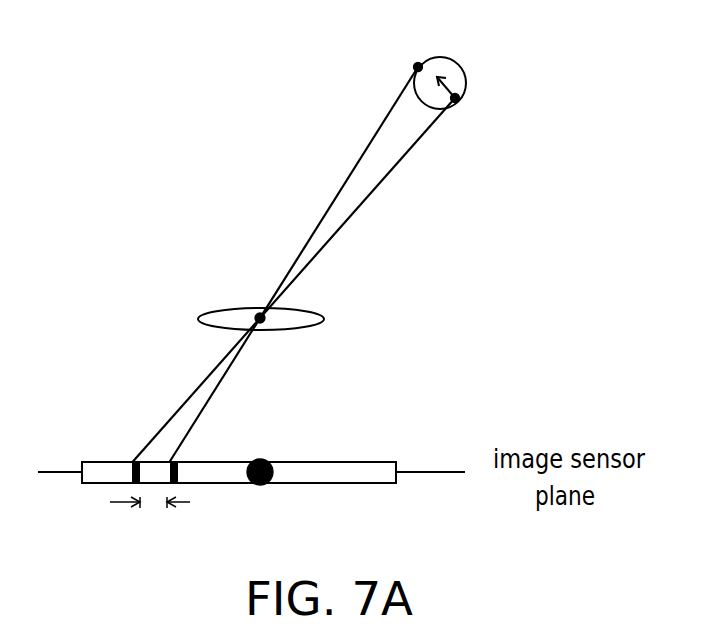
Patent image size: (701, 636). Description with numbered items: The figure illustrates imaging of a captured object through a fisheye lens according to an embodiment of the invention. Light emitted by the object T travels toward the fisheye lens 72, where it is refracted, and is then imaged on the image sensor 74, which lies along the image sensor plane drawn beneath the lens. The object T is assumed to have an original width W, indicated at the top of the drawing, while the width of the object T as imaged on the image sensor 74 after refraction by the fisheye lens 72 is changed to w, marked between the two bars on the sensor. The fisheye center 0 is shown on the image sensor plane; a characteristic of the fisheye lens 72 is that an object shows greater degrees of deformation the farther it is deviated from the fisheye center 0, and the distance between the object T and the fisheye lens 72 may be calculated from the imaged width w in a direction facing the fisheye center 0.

The fisheye lens 72 is at (327, 318).
The image sensor 74 is at (325, 462).
The object T is at (404, 62).
The original width of the object W is at (453, 63).
The width imaged on the image sensor w is at (150, 518).
The fisheye center 0 is at (260, 496).